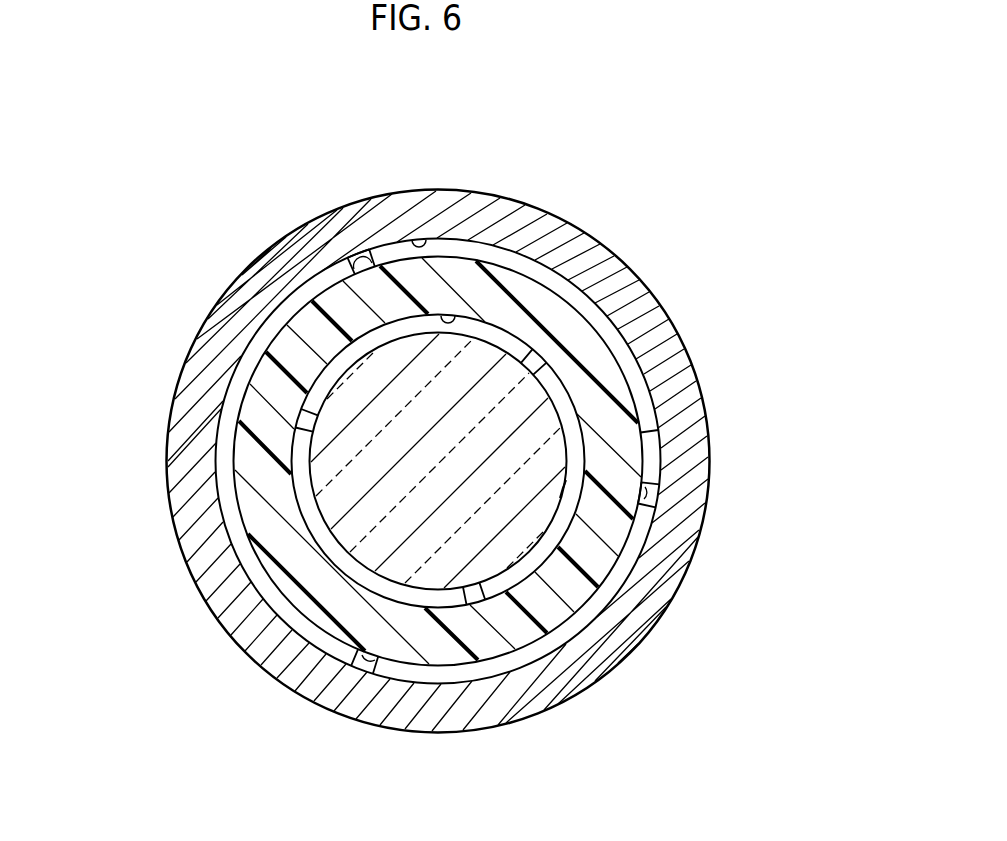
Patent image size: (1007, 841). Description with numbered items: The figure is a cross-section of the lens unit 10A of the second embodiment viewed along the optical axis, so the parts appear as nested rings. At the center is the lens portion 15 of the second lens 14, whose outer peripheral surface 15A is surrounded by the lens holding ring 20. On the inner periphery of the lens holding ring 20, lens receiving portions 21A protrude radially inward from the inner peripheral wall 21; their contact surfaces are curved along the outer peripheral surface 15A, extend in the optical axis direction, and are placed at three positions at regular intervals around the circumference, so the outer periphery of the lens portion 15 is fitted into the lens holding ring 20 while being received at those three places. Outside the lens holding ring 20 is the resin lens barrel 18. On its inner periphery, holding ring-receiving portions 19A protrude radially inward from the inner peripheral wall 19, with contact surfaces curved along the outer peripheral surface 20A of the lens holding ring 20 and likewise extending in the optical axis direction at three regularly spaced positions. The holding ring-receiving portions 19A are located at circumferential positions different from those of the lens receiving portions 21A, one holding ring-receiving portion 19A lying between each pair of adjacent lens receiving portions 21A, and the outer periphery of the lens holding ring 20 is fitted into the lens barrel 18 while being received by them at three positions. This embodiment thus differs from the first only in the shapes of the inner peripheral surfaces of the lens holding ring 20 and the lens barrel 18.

The lens unit 10A is at (686, 133).
The second lens 14 is at (545, 548).
The lens portion 15 is at (568, 459).
The outer peripheral surface of the lens portion 15A is at (561, 499).
The lens barrel 18 is at (615, 252).
The inner peripheral wall 19 is at (420, 238).
The holding ring-receiving portion 19A is at (368, 252).
The lens holding ring 20 is at (633, 382).
The outer peripheral surface of the lens holding ring 20A is at (627, 376).
The inner peripheral wall 21 is at (449, 314).
The lens receiving portion 21A is at (549, 352).